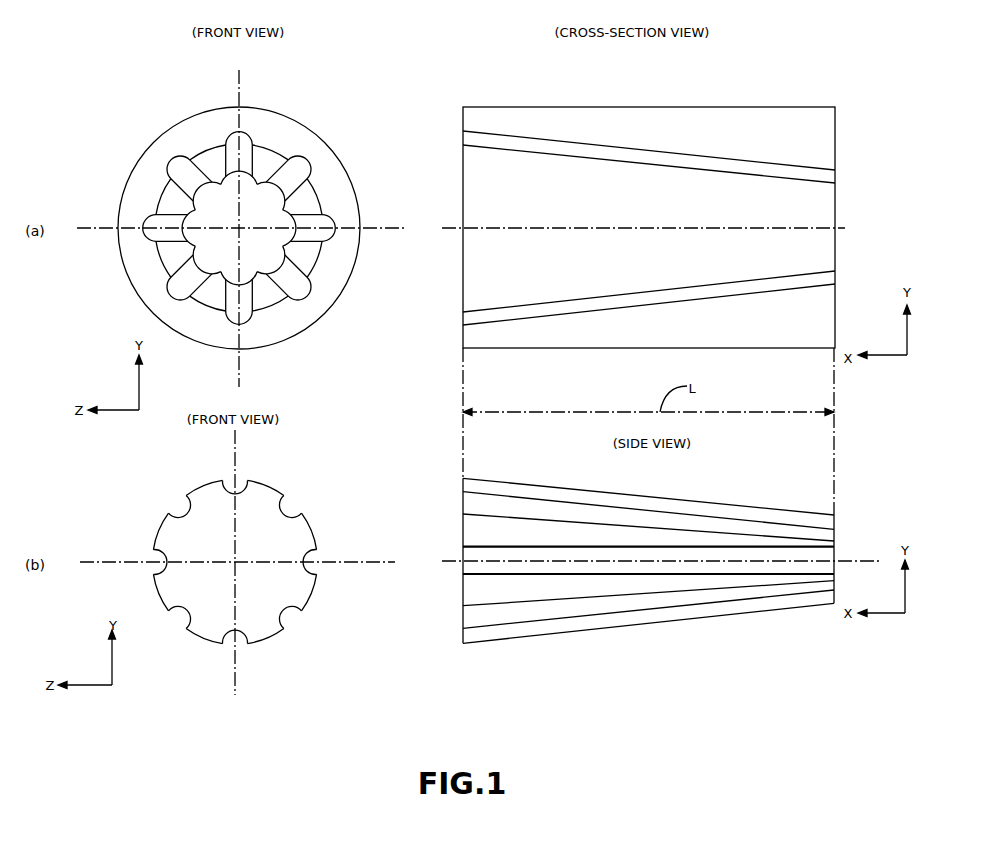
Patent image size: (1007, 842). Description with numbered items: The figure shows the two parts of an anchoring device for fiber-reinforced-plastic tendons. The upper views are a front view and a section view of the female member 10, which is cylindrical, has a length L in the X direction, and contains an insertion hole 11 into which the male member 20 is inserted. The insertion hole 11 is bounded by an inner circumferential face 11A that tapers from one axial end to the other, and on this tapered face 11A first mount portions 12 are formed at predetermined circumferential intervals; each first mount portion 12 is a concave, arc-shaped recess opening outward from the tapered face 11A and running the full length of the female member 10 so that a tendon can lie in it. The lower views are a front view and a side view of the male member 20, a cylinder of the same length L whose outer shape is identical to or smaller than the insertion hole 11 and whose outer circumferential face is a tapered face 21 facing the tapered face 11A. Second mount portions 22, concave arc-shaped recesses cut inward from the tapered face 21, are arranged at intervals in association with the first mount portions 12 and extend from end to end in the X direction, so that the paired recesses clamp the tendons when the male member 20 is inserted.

The female member 10 is at (195, 113).
The insertion hole 11 is at (207, 217).
The inner circumferential face 11A is at (268, 162).
The first mount portions 12 is at (245, 148).
The male member 20 is at (203, 483).
The tapered face 21 is at (190, 495).
The second mount portions 22 is at (243, 487).